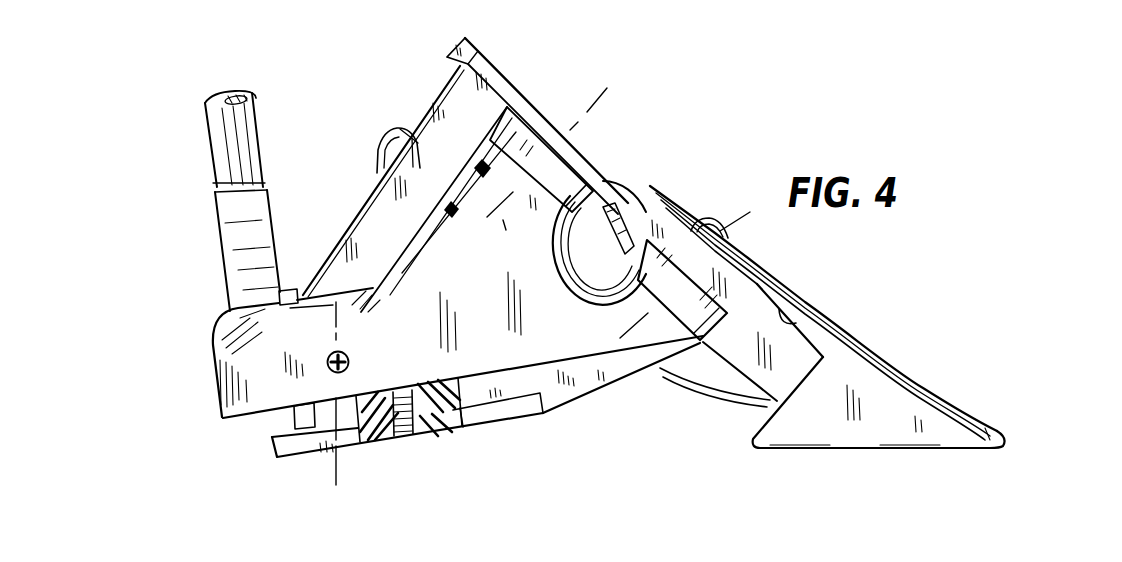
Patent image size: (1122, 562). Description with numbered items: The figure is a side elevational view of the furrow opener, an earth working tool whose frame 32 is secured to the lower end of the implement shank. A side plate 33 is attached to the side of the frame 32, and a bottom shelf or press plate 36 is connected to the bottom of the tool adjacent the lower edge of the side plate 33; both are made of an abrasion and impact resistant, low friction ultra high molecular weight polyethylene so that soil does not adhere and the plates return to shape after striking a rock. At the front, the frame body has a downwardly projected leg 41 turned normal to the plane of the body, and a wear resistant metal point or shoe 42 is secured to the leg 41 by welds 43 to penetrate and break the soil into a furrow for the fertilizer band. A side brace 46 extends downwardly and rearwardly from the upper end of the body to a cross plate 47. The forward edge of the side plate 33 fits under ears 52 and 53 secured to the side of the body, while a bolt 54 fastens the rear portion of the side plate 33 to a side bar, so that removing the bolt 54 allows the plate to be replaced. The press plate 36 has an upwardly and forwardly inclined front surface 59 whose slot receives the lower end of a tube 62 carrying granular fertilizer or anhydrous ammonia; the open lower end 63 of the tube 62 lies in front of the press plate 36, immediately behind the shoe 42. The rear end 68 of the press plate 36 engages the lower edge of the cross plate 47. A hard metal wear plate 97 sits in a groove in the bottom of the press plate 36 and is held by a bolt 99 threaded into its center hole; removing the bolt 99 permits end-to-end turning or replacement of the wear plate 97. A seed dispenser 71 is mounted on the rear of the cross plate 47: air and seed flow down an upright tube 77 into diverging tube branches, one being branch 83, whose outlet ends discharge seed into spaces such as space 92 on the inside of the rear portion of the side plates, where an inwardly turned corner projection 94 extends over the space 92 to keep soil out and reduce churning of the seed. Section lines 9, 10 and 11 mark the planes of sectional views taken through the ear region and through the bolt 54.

The section line 9- 9 is at (591, 100).
The section line 10- 10 is at (731, 215).
The section line 11- 11 is at (328, 313).
The frame 32 is at (430, 102).
The side plate 33 is at (491, 294).
The press plate 36 is at (569, 393).
The leg 41 is at (748, 347).
The shoe 42 is at (920, 416).
The welds 43 is at (796, 318).
The side brace 46 is at (388, 214).
The cross plate 47 is at (287, 290).
The ear 52 is at (558, 166).
The ear 53 is at (694, 296).
The bolt 54 is at (347, 356).
The front surface 59 is at (614, 392).
The tube 62 is at (377, 150).
The open lower end 63 is at (738, 392).
The rear end 68 is at (292, 430).
The seed dispenser 71 is at (203, 207).
The upright tube 77 is at (227, 131).
The tube branch 83 is at (232, 225).
The space 92 is at (258, 426).
The corner projection 94 is at (213, 328).
The wear plate 97 is at (496, 418).
The bolt 99 is at (397, 393).